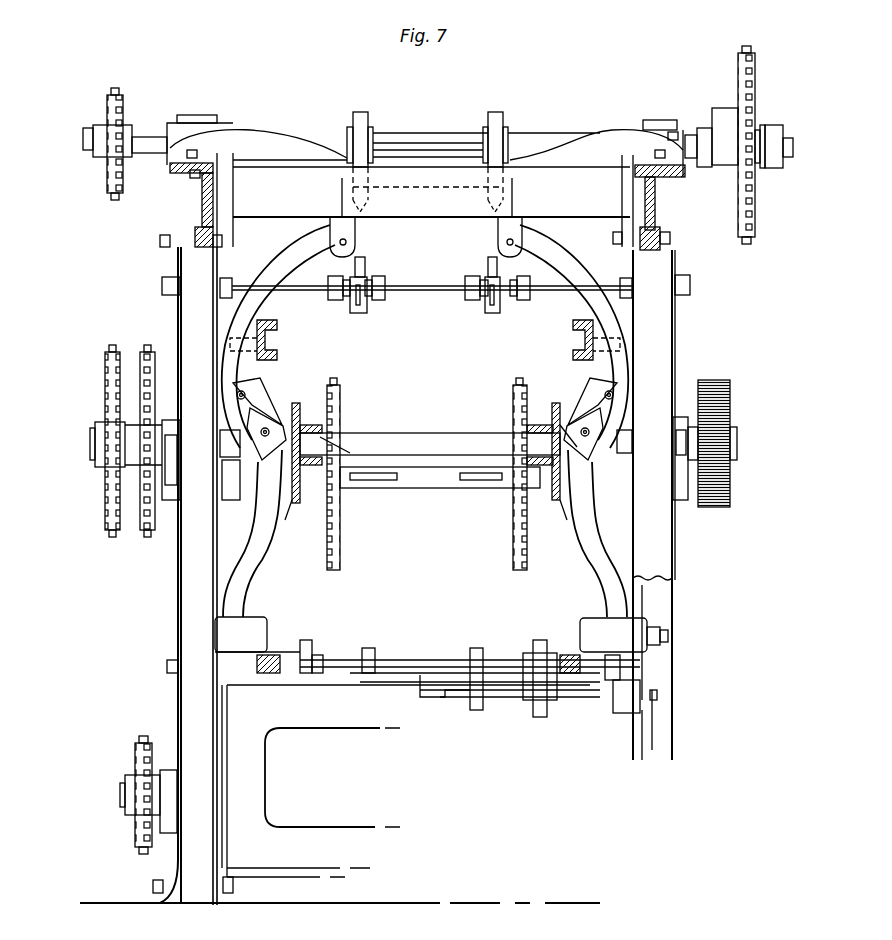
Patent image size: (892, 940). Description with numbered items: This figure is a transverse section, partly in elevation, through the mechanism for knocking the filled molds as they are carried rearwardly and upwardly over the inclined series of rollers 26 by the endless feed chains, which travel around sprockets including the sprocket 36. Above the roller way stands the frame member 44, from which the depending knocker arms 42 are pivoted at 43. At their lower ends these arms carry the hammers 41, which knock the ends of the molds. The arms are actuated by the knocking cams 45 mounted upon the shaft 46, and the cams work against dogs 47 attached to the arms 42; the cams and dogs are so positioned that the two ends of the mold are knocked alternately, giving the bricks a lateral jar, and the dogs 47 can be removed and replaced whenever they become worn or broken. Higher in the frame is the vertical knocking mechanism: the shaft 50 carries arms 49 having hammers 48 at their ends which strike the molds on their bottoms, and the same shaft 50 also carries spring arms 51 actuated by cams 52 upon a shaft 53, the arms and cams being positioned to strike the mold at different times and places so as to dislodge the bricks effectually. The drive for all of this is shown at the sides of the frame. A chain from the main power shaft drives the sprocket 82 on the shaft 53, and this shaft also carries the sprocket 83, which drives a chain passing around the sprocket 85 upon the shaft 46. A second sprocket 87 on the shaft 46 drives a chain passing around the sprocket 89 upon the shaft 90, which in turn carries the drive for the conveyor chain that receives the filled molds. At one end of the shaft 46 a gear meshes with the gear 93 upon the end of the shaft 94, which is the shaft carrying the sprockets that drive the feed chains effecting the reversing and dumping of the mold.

The rollers 26 is at (438, 660).
The sprocket 36 is at (341, 533).
The hammers 41 is at (441, 634).
The arms 42 is at (252, 375).
The pivot 43 is at (330, 247).
The frame member 44 is at (385, 510).
The knocking cam 45 is at (296, 504).
The shaft 46 is at (92, 443).
The dogs 47 is at (262, 412).
The hammers 48 is at (368, 317).
The arms 49 is at (349, 302).
The shaft 50 is at (432, 285).
The spring arms 51 is at (427, 192).
The cams 52 is at (361, 112).
The shaft 53 is at (438, 140).
The sprocket 82 is at (756, 78).
The sprocket 83 is at (123, 112).
The sprocket 85 is at (105, 378).
The sprocket 87 is at (150, 350).
The sprocket 89 is at (145, 742).
The shaft 90 is at (123, 792).
The gear 93 is at (718, 382).
The shaft 94 is at (632, 440).